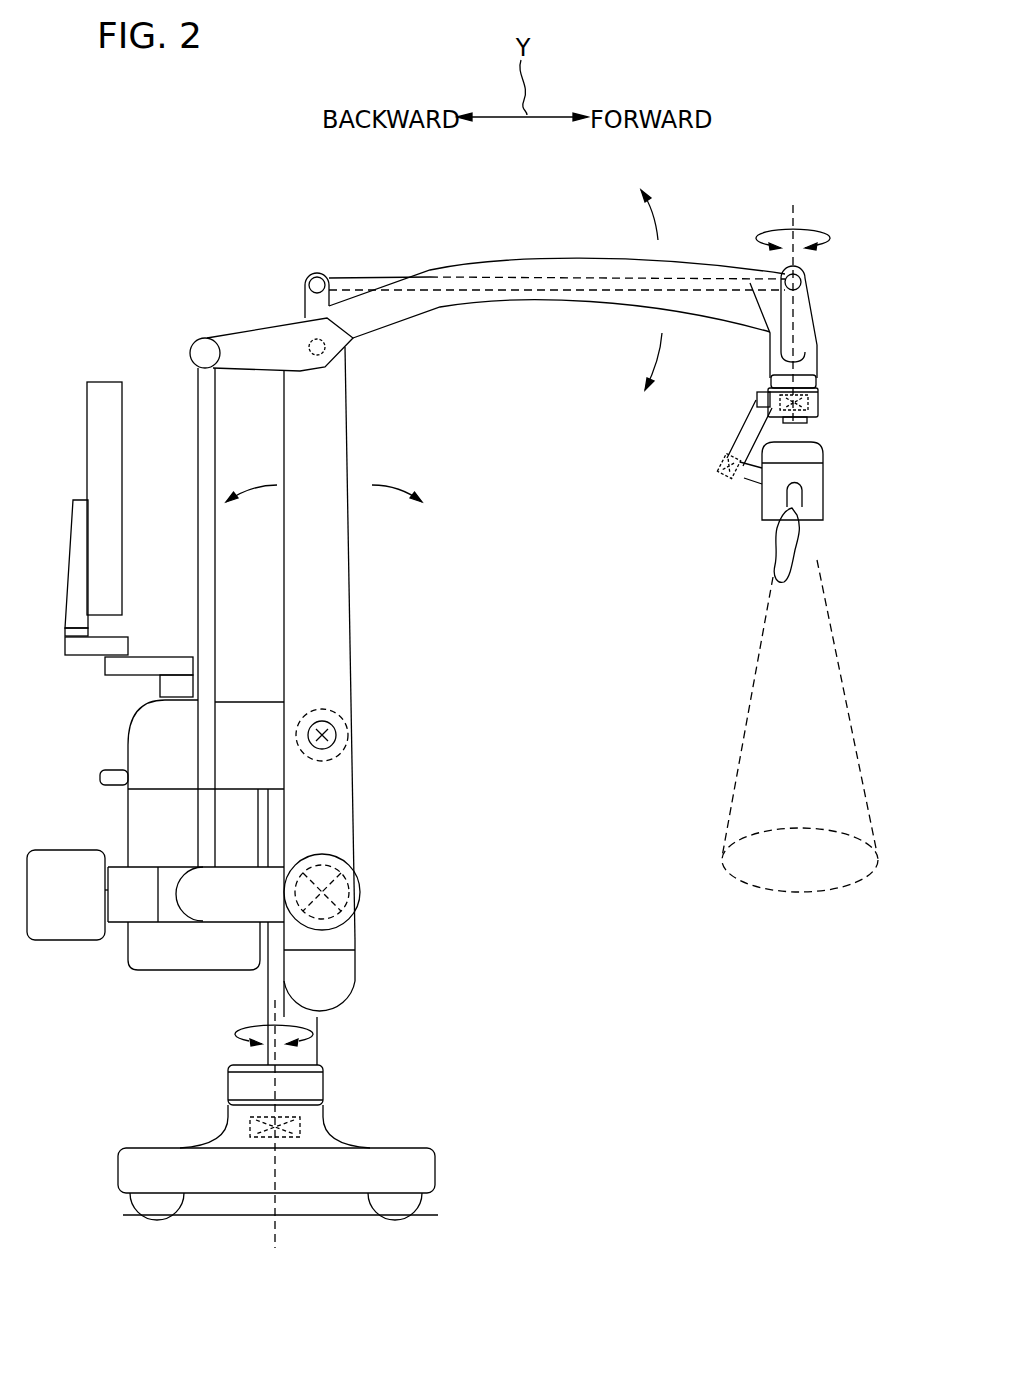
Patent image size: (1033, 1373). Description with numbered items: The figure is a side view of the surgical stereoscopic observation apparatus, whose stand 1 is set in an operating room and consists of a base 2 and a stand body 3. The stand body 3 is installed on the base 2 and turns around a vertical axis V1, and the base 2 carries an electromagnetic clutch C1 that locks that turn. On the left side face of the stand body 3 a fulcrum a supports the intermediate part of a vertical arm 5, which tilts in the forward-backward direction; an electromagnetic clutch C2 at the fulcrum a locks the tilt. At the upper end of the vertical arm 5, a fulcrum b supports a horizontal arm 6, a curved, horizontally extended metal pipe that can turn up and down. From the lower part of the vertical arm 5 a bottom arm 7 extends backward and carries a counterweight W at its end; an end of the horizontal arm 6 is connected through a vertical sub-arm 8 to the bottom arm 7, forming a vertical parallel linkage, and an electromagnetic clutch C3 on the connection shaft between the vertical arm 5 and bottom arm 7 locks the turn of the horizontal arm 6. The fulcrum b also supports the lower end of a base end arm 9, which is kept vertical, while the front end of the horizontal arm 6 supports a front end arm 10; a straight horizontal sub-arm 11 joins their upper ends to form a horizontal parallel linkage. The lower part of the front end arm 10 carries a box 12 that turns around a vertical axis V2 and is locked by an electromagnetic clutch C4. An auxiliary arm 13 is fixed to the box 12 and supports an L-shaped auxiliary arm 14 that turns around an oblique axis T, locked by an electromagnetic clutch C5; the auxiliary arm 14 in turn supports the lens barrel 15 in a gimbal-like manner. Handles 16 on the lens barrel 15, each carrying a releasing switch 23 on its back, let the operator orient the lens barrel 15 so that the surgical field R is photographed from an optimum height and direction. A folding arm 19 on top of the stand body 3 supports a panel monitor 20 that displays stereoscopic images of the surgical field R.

The stand 1 is at (185, 265).
The base 2 is at (152, 1148).
The stand body 3 is at (128, 815).
The vertical arm 5 is at (352, 557).
The horizontal arm 6 is at (562, 258).
The bottom arm 7 is at (225, 925).
The vertical sub-arm 8 is at (198, 408).
The base end arm 9 is at (305, 297).
The front end arm 10 is at (817, 305).
The horizontal sub-arm 11 is at (372, 275).
The box 12 is at (818, 398).
The auxiliary arm 13 is at (745, 425).
The L-shaped auxiliary arm 14 is at (752, 495).
The lens barrel 15 is at (823, 477).
The handles 16 is at (812, 565).
The folding arm 19 is at (133, 678).
The panel monitor 20 is at (86, 440).
The releasing switch 23 is at (782, 540).
The counterweight W is at (68, 945).
The surgical field R is at (800, 860).
The oblique axis T is at (722, 460).
The vertical axis V1 is at (276, 1109).
The vertical axis V2 is at (793, 296).
The electromagnetic clutch C1 is at (303, 1127).
The electromagnetic clutch C2 is at (345, 718).
The electromagnetic clutch C3 is at (345, 877).
The electromagnetic clutch C4 is at (820, 408).
The electromagnetic clutch C5 is at (718, 472).
The fulcrum a is at (338, 742).
The fulcrum b is at (318, 355).